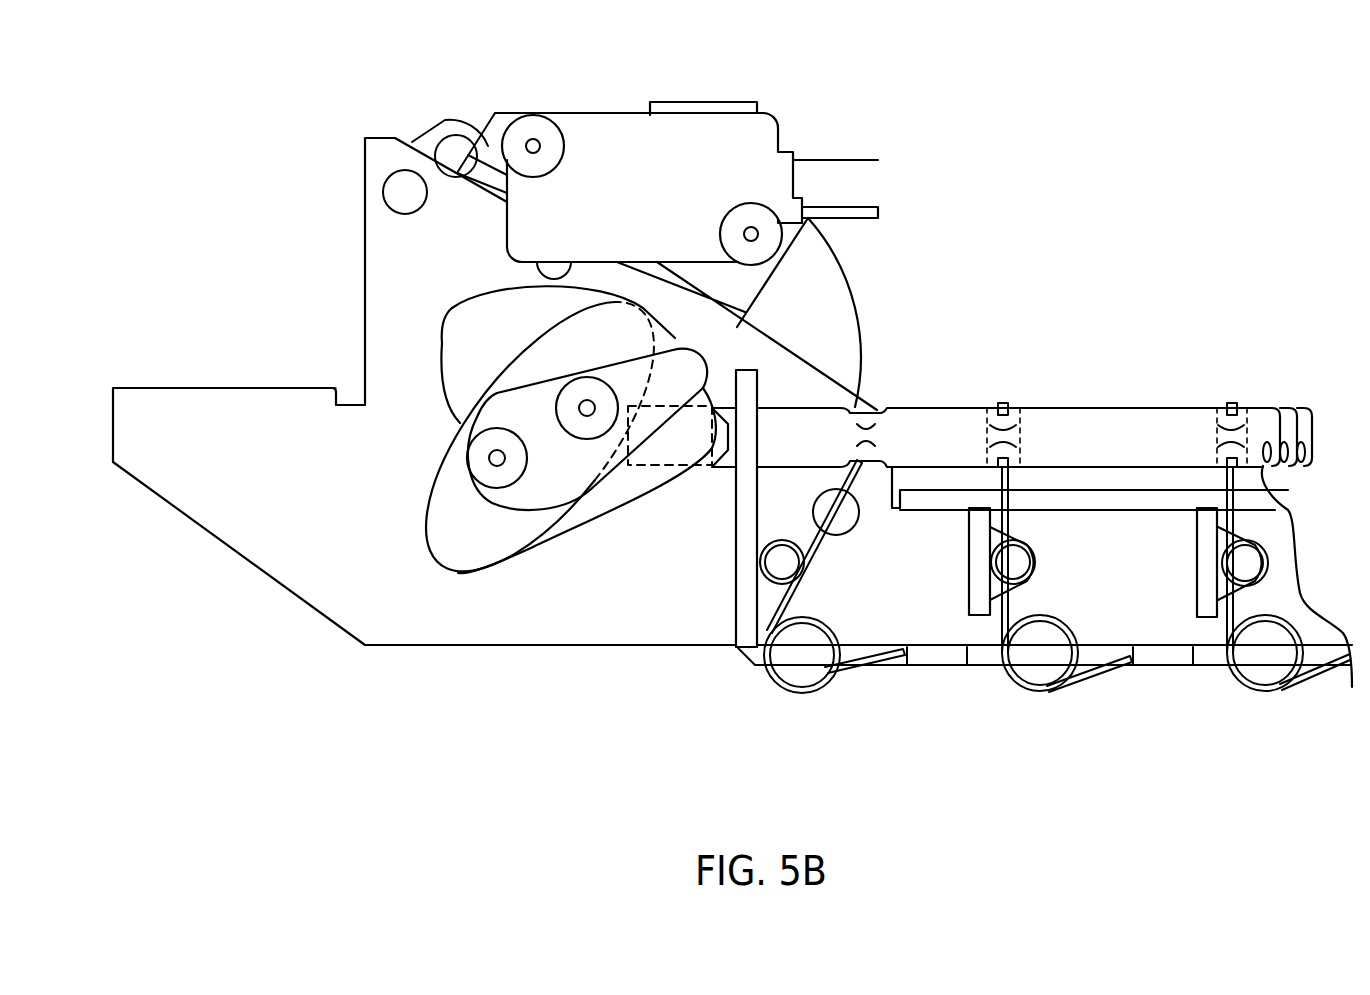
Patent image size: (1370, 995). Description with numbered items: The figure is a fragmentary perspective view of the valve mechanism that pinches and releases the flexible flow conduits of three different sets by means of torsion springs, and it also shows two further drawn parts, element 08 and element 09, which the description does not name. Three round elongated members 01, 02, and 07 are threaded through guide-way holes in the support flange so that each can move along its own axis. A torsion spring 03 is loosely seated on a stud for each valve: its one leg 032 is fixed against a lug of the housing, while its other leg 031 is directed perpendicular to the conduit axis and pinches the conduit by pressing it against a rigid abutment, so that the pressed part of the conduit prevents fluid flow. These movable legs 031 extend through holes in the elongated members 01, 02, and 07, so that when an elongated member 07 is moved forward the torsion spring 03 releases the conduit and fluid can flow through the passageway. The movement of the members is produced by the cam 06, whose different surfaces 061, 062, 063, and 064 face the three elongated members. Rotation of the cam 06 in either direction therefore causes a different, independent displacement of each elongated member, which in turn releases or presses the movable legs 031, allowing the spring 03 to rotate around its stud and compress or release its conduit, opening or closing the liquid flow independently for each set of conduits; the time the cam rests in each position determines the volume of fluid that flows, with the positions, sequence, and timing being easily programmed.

The round elongated member 01 is at (948, 412).
The round elongated member 02 is at (1275, 407).
The torsion spring 03 is at (798, 630).
The movable spring leg 031 is at (783, 605).
The fixed spring leg 032 is at (883, 667).
The cam 06 is at (472, 383).
The cam surface 061 is at (697, 447).
The cam surface 062 is at (437, 570).
The cam surface 063 is at (458, 291).
The cam surface 064 is at (652, 310).
The round elongated member 07 is at (1297, 407).
The roller 08 is at (480, 427).
The micro switch 09 is at (767, 143).